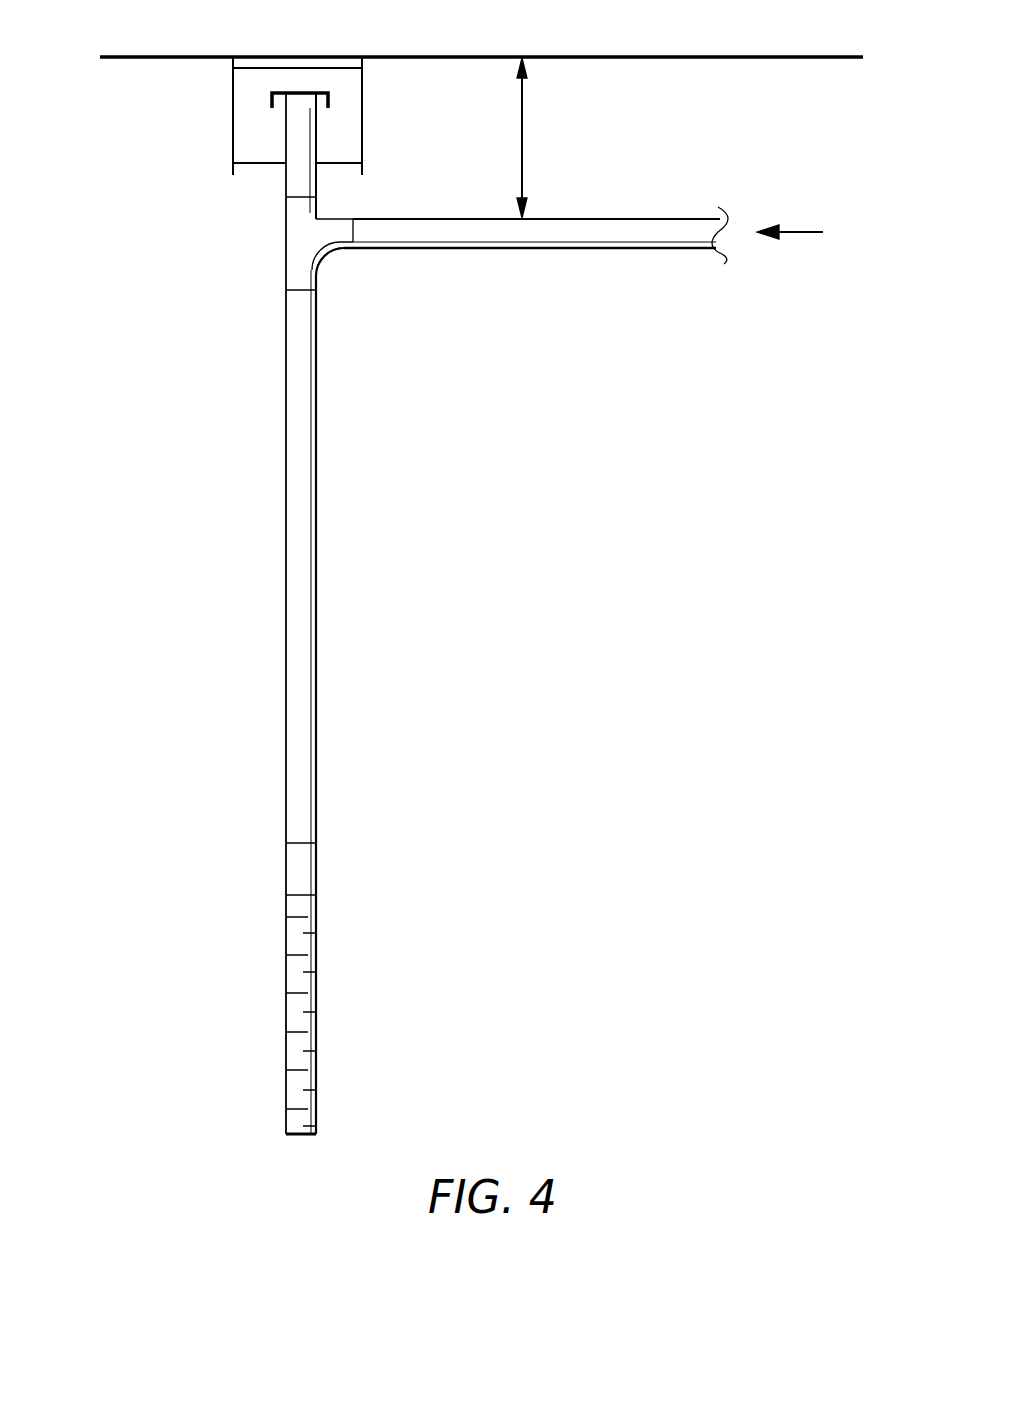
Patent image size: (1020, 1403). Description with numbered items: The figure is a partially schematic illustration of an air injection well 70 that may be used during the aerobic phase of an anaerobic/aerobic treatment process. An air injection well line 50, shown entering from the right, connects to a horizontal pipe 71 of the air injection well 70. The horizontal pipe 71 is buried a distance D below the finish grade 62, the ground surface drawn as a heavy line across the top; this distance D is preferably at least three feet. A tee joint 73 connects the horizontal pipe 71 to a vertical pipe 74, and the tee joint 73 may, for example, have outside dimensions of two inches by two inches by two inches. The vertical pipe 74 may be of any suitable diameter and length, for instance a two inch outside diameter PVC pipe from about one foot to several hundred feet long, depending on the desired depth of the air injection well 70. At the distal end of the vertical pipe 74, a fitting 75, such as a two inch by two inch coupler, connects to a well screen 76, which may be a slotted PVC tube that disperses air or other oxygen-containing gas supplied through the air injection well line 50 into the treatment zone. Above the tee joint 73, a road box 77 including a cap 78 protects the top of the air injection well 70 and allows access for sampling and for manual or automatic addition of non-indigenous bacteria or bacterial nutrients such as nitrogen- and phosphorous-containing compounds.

The air injection well line 50 is at (793, 233).
The finish grade 62 is at (632, 56).
The air injection well 70 is at (242, 510).
The horizontal pipe 71 is at (470, 250).
The tee joint 73 is at (308, 238).
The vertical pipe 74 is at (313, 452).
The fitting 75 is at (306, 871).
The well screen 76 is at (317, 945).
The road box 77 is at (328, 62).
The cap 78 is at (299, 91).
The distance D is at (524, 143).